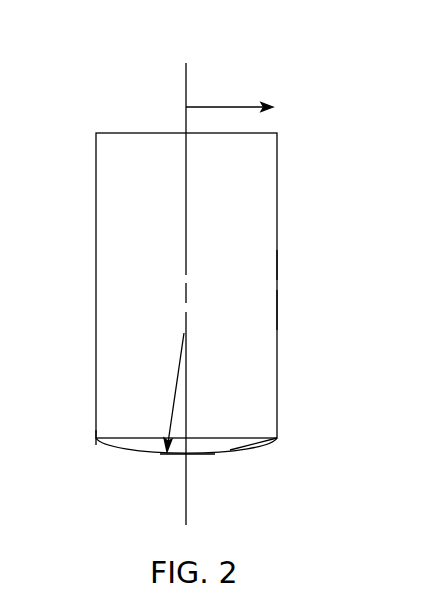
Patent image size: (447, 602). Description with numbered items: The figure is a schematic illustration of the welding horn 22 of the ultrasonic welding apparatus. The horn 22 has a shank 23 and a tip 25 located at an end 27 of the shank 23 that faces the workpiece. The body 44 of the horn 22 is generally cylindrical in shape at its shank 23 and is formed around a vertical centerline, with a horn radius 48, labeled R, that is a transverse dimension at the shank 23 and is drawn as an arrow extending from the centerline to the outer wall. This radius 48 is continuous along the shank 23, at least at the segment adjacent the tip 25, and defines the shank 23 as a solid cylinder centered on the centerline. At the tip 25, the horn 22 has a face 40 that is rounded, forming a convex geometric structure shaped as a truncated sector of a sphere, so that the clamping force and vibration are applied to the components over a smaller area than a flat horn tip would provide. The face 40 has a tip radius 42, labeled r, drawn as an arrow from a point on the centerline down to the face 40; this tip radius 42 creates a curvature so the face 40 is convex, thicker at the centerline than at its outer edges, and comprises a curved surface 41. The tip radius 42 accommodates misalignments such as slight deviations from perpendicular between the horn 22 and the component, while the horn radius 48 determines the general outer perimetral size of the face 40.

The horn 22 is at (277, 265).
The shank 23 is at (277, 308).
The tip 25 is at (108, 440).
The end 27 is at (252, 455).
The face 40 is at (205, 457).
The curved surface 41 is at (145, 453).
The tip radius 42 is at (186, 215).
The body 44 is at (277, 203).
The horn radius 48 is at (247, 105).